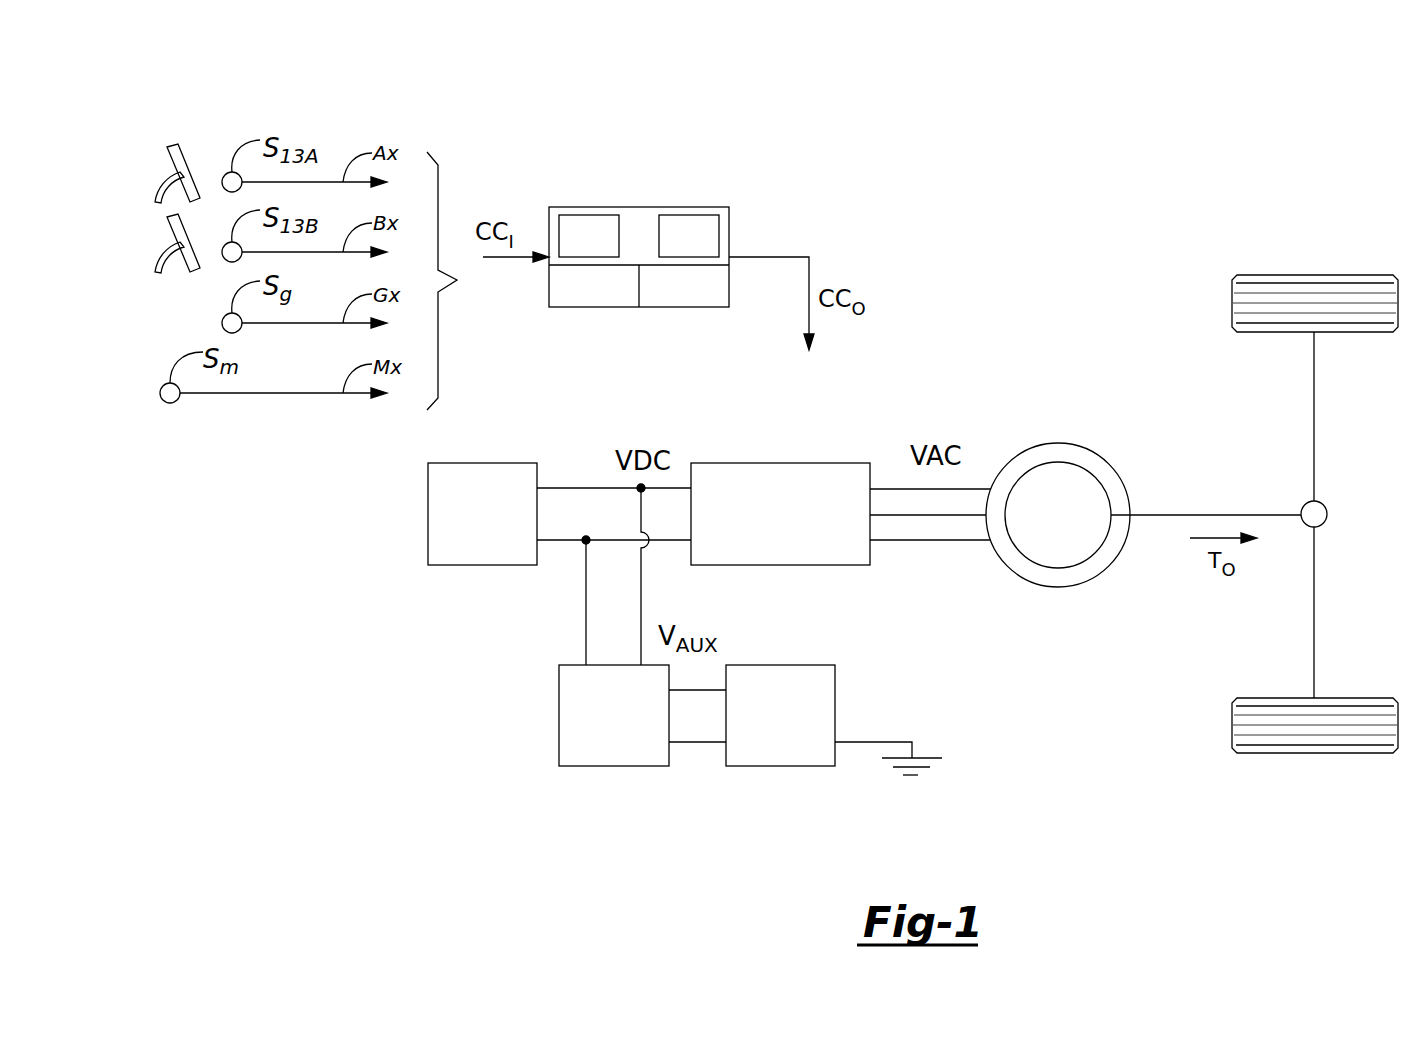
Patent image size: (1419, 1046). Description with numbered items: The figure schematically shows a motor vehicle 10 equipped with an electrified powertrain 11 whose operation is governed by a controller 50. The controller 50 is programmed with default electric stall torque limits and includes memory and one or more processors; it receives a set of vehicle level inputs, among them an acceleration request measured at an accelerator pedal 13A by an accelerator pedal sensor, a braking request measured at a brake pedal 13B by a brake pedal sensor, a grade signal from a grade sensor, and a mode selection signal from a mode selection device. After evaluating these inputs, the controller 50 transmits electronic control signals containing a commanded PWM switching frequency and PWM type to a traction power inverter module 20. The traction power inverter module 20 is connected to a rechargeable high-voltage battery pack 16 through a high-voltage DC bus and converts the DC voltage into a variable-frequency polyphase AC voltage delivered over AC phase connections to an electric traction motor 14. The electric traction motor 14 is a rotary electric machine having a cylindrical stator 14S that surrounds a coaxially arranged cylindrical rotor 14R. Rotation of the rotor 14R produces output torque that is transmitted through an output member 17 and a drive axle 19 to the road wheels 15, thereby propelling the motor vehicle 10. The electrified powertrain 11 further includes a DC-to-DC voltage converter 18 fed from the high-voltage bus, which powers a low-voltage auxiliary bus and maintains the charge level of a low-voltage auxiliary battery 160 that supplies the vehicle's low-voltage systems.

The motor vehicle 10 is at (1186, 194).
The electrified powertrain 11 is at (1013, 382).
The accelerator pedal 13A is at (152, 132).
The brake pedal 13B is at (134, 230).
The electric traction motor 14 is at (1092, 537).
The stator 14S is at (1115, 492).
The rotor 14R is at (1058, 567).
The road wheels 15 is at (1313, 275).
The high-voltage battery pack 16 is at (482, 565).
The output member 17 is at (1243, 515).
The DC-to-DC voltage converter 18 is at (613, 766).
The drive axle 19 is at (1314, 435).
The traction power inverter module 20 is at (780, 463).
The controller 50 is at (640, 206).
The auxiliary battery 160 is at (780, 766).